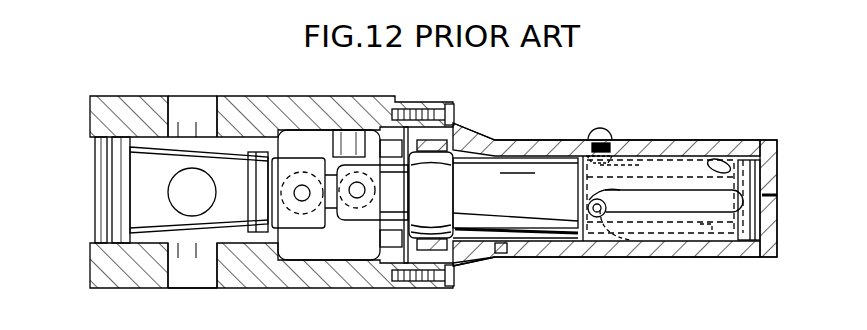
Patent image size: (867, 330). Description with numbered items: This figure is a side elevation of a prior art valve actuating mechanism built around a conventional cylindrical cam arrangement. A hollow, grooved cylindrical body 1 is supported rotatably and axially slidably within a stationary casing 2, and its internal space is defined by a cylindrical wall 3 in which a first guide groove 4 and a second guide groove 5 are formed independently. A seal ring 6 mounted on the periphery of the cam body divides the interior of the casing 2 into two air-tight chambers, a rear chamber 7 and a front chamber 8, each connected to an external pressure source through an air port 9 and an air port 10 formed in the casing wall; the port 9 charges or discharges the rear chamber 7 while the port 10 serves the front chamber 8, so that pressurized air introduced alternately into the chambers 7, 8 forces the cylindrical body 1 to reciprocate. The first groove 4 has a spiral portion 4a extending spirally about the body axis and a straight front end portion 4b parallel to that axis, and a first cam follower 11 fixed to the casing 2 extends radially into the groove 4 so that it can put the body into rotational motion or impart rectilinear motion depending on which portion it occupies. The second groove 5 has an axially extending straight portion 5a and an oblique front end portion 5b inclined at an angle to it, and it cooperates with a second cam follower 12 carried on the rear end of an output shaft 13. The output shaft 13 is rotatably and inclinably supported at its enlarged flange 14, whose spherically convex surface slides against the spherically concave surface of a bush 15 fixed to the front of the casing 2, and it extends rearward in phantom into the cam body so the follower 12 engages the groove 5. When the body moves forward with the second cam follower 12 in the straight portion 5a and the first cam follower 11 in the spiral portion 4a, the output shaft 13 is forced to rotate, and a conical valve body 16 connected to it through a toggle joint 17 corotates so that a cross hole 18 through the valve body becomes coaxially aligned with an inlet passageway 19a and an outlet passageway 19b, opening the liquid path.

The cylindrical body 1 is at (660, 170).
The stationary casing 2 is at (778, 144).
The cylindrical wall 3 is at (687, 260).
The first guide groove 4 is at (708, 168).
The spiral portion 4a is at (743, 143).
The straight front end portion 4b is at (643, 134).
The second guide groove 5 is at (668, 200).
The straight portion 5a is at (710, 200).
The oblique front end portion 5b is at (617, 213).
The seal ring 6 is at (753, 212).
The rear chamber 7 is at (760, 177).
The front chamber 8 is at (548, 235).
The air port 9 is at (770, 198).
The air port 10 is at (497, 250).
The first cam follower 11 is at (597, 148).
The second cam follower 12 is at (574, 243).
The output shaft 13 is at (540, 192).
The enlarged flange 14 is at (484, 158).
The bush 15 is at (450, 145).
The conical valve body 16 is at (152, 160).
The toggle joint 17 is at (318, 157).
The cross hole 18 is at (202, 186).
The inlet passageway 19a is at (194, 108).
The outlet passageway 19b is at (193, 278).